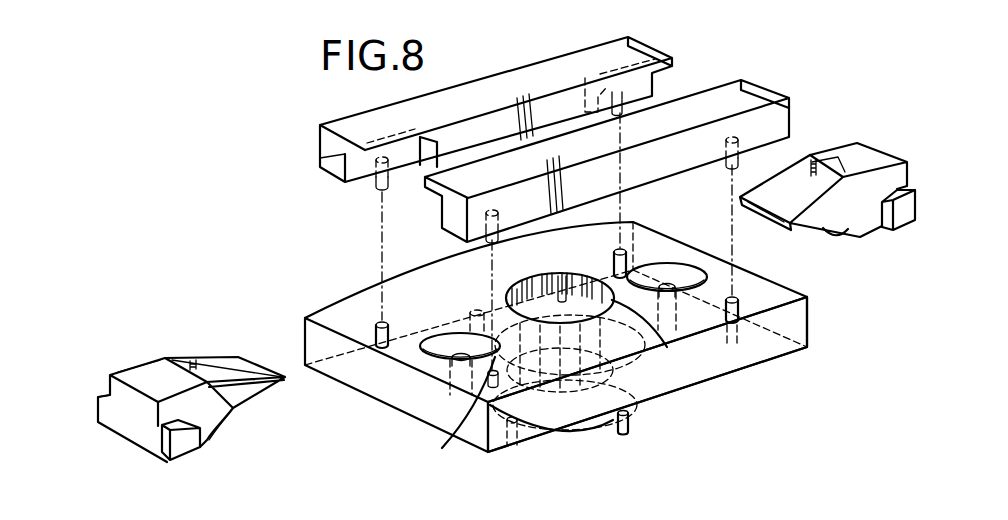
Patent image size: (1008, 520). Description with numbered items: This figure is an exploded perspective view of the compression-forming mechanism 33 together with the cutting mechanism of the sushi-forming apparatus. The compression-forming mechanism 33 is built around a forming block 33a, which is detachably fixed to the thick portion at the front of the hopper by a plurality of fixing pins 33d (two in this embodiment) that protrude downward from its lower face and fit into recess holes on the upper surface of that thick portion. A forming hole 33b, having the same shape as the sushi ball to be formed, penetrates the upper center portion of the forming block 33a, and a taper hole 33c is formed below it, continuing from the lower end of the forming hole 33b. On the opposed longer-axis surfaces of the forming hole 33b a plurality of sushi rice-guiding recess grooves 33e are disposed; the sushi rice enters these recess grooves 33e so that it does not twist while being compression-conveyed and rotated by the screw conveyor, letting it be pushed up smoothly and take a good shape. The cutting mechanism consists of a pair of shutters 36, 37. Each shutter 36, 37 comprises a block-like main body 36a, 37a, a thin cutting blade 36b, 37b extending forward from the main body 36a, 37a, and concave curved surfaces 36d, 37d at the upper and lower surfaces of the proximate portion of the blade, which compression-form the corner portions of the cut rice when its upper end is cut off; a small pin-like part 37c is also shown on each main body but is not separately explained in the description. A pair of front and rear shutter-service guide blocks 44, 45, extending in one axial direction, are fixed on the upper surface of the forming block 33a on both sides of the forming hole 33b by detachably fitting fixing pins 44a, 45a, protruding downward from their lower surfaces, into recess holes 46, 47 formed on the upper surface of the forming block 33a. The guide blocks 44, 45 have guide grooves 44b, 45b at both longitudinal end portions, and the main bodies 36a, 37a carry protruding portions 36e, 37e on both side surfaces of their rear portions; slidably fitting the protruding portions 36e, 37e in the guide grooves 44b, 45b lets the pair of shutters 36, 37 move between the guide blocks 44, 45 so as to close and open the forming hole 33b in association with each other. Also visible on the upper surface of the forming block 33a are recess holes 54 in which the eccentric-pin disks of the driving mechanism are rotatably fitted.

The compression-forming mechanism 33 is at (600, 436).
The forming block 33a is at (728, 366).
The forming hole 33b is at (573, 374).
The taper hole 33c is at (513, 425).
The fixing pins 33d is at (470, 308).
The sushi rice-guiding recess grooves 33e is at (543, 280).
The shutter 36 is at (162, 350).
The main body 36a is at (145, 372).
The cutting blade 36b is at (242, 362).
The curved surface 36d is at (230, 415).
The protruding portions 36e is at (98, 410).
The shutter 37 is at (877, 148).
The main body 37a is at (872, 160).
The cutting blade 37b is at (775, 216).
The pin 37c is at (811, 156).
The curved surface 37d is at (838, 233).
The protruding portions 37e is at (902, 220).
The shutter-service guide block 44 is at (456, 86).
The fixing pins 44a is at (376, 186).
The guide grooves 44b is at (344, 166).
The shutter-service guide block 45 is at (774, 82).
The fixing pins 45a is at (495, 214).
The guide grooves 45b is at (440, 204).
The recess holes 46 is at (378, 322).
The recess holes 47 is at (493, 378).
The recess holes 54 is at (432, 359).